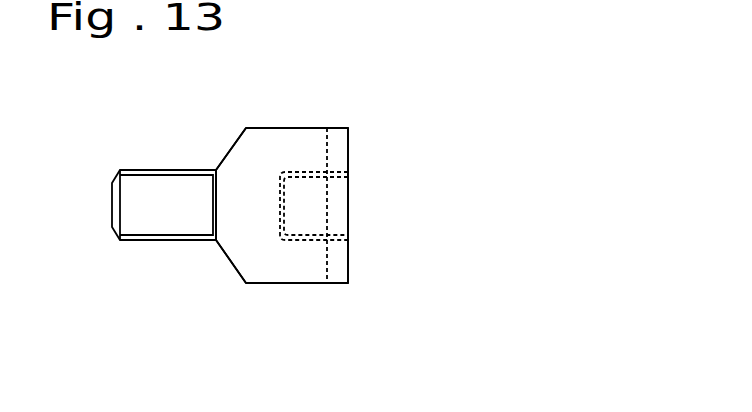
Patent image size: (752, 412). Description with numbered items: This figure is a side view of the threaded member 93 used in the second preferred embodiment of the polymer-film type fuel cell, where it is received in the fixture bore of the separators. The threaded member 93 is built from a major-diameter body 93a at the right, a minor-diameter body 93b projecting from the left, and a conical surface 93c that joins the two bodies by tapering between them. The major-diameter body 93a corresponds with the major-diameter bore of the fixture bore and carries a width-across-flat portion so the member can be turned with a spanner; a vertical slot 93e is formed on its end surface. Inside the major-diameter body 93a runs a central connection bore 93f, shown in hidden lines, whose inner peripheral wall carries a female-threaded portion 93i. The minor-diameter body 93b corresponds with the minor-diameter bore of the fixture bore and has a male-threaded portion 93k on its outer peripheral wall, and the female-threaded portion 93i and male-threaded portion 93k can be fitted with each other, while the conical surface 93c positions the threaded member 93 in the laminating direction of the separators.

The threaded member 93 is at (265, 262).
The major-diameter body 93a is at (303, 268).
The minor-diameter body 93b is at (142, 210).
The conical surface 93c is at (228, 152).
The vertical slot 93e is at (333, 261).
The central connection bore 93f is at (331, 200).
The female-threaded portion 93i is at (301, 233).
The male-threaded portion 93k is at (141, 170).